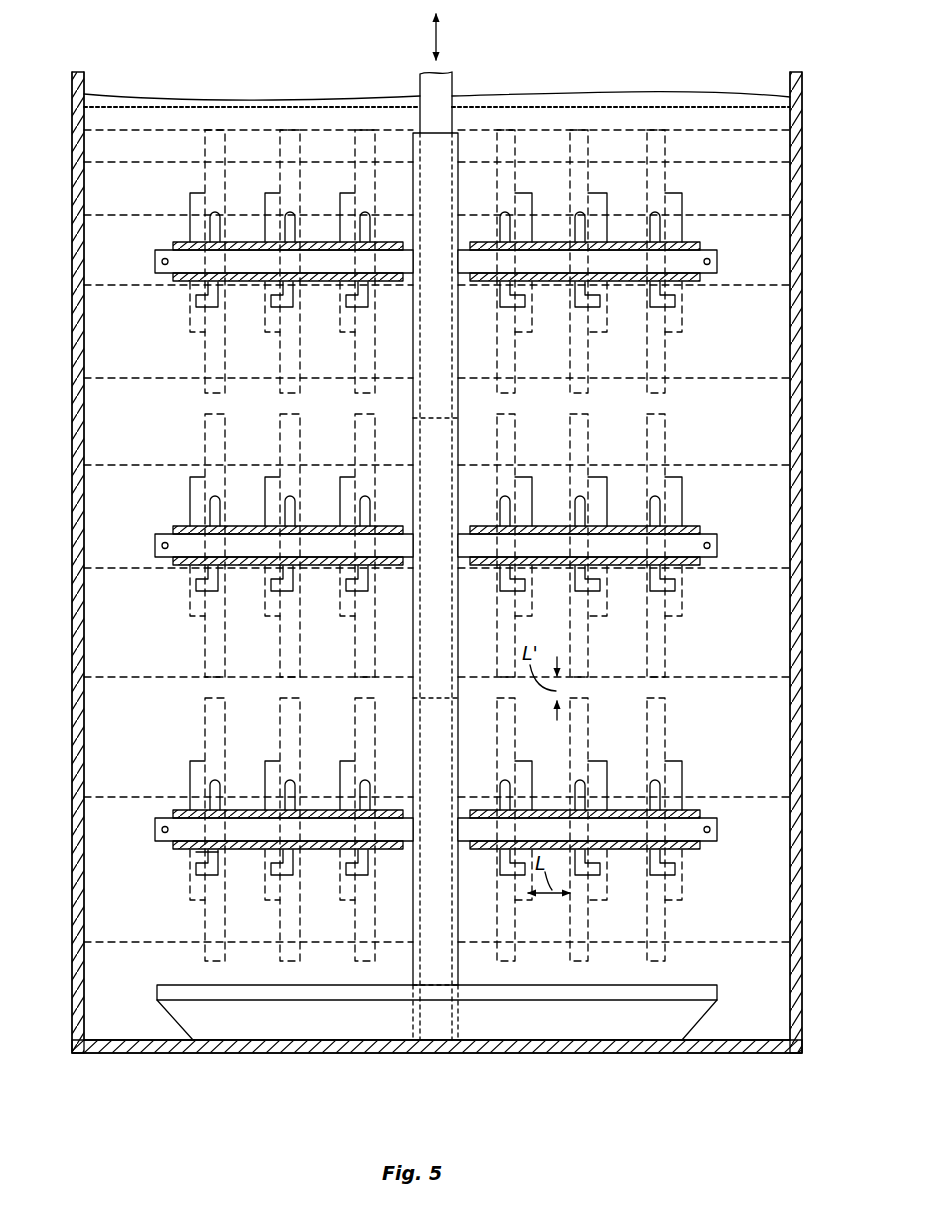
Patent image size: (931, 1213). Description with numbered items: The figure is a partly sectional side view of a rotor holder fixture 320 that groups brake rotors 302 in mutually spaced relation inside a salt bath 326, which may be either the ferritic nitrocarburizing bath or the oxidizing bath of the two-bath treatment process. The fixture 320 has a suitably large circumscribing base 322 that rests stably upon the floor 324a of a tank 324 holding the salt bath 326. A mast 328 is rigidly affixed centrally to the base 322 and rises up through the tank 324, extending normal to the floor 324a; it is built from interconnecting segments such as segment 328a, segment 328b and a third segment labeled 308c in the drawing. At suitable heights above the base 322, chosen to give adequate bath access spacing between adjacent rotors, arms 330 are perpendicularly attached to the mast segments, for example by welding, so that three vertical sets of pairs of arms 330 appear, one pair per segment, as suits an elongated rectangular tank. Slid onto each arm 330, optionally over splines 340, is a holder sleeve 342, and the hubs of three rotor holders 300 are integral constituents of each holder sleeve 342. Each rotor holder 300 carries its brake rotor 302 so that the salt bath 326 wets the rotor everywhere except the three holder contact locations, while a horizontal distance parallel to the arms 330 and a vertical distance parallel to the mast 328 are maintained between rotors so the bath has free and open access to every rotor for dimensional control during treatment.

The rotor holder 300 is at (202, 312).
The brake rotor 302 is at (187, 198).
The shaft section 308c is at (458, 345).
The rotor holder fixture 320 is at (470, 124).
The base 322 is at (700, 1020).
The tank 324 is at (803, 1032).
The floor 324a is at (148, 1040).
The salt bath 326 is at (765, 357).
The mast 328 is at (416, 132).
The segment 328a is at (458, 936).
The segment 328b is at (458, 633).
The arm 330 is at (163, 276).
The splines 340 is at (269, 821).
The holder sleeve 342 is at (322, 241).